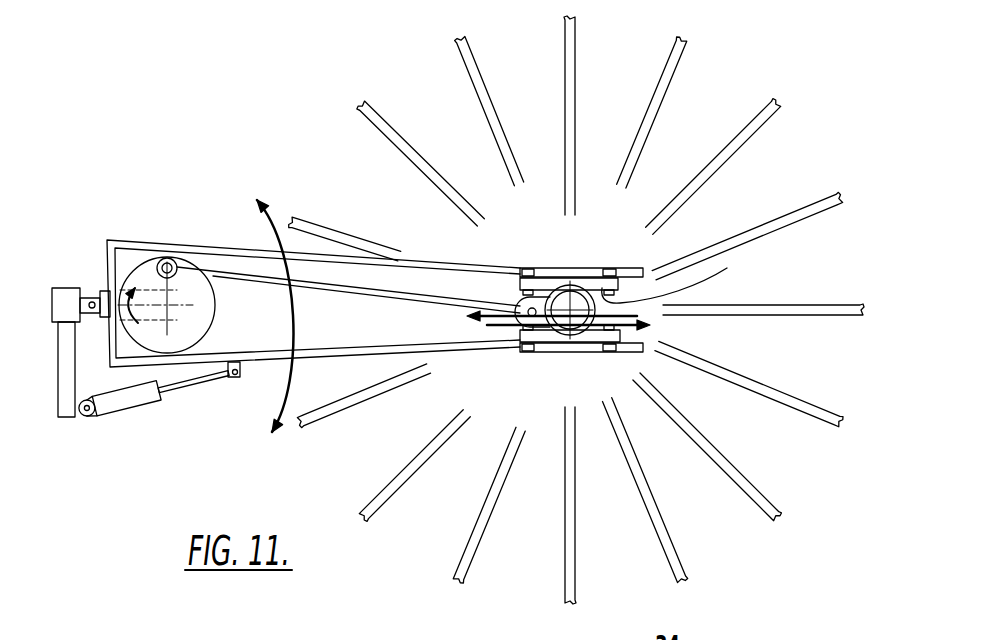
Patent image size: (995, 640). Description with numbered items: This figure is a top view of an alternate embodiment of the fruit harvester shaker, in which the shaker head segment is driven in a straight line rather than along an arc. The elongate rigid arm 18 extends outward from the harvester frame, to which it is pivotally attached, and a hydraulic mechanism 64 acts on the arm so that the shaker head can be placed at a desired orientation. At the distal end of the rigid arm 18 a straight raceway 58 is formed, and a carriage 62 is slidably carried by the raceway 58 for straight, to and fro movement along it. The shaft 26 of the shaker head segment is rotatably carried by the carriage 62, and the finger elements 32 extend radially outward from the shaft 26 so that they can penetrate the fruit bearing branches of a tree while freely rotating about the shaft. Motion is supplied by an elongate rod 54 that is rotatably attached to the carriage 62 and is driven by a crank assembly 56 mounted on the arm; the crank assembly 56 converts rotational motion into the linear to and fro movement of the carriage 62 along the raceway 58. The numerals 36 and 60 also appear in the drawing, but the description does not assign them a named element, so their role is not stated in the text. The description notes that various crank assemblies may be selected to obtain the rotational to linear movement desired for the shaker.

The elongate rigid arm 18 is at (238, 247).
The shaft 26 is at (573, 310).
The finger elements 32 is at (770, 228).
The direction of rotation 36 is at (540, 228).
The elongate rod 54 is at (313, 291).
The crank assembly 56 is at (177, 338).
The straight raceway 58 is at (574, 268).
The fastener 60 is at (615, 360).
The carriage 62 is at (682, 277).
The hydraulic mechanism 64 is at (120, 413).